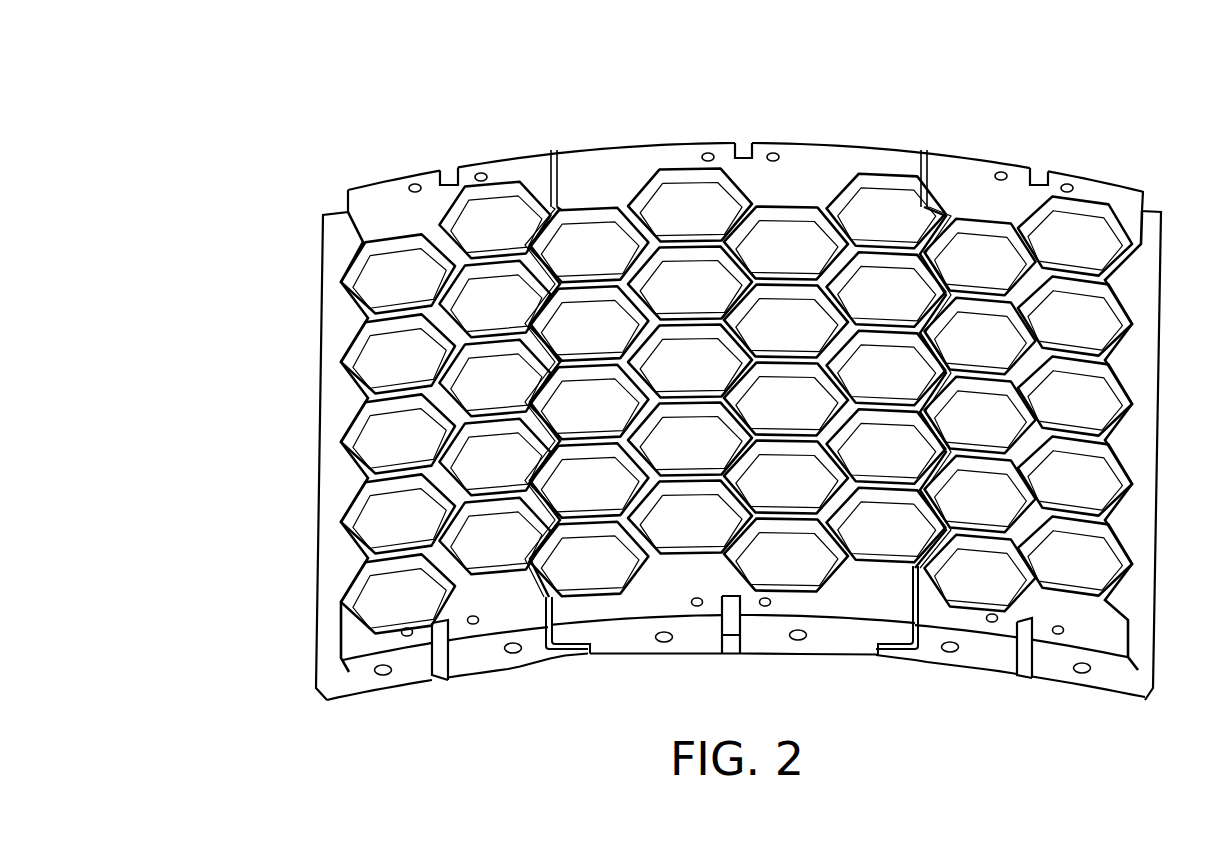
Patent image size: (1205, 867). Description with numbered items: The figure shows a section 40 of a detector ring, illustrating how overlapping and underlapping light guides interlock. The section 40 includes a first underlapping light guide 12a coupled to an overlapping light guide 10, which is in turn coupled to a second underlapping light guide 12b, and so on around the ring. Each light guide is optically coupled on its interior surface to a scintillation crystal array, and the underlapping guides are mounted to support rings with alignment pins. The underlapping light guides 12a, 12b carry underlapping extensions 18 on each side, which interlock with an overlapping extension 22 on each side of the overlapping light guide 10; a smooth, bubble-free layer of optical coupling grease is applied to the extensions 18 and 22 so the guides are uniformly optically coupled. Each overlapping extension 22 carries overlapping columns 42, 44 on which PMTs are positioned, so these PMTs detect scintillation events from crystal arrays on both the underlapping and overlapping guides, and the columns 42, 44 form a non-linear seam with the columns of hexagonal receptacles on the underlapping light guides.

The overlapping light guide 10 is at (642, 136).
The first underlapping light guide 12a is at (369, 165).
The second underlapping light guide 12b is at (1118, 162).
The underlapping extension 18 is at (566, 660).
The overlapping extension 22 is at (571, 608).
The section 40 is at (252, 93).
The overlapping column 42 is at (567, 163).
The overlapping column 44 is at (937, 161).